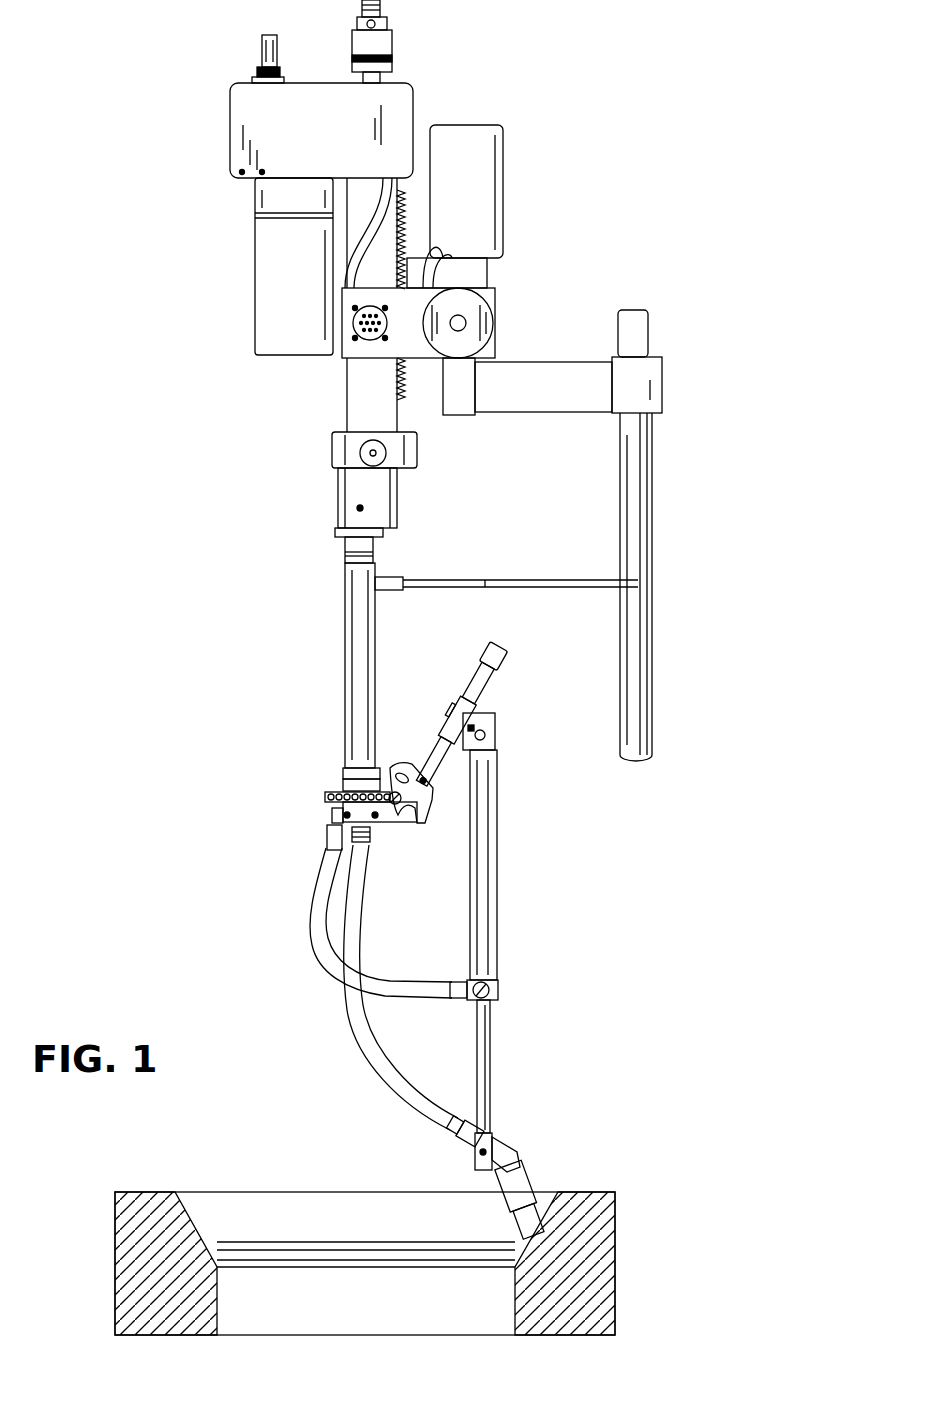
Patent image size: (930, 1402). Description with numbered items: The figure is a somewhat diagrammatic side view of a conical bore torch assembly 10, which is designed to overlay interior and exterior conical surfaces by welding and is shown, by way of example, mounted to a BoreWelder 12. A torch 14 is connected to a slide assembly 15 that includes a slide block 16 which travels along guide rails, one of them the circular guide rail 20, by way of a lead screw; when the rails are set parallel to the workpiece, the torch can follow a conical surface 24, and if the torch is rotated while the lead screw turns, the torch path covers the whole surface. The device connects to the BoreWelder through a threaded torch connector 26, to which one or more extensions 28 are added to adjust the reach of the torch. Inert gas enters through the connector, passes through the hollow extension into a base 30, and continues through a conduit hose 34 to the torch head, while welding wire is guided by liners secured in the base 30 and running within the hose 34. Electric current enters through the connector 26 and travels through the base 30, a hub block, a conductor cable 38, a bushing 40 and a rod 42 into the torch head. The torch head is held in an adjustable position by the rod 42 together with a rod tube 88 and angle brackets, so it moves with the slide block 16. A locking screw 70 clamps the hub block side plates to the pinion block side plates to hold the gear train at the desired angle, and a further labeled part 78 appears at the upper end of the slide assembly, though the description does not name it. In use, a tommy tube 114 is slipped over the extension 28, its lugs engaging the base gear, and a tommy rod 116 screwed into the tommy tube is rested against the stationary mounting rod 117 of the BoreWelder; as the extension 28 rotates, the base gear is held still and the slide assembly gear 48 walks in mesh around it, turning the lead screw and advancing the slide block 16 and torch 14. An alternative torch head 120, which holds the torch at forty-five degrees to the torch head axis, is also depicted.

The conical bore torch assembly 10 is at (266, 751).
The BoreWelder 12 is at (552, 163).
The torch 14 is at (538, 1158).
The slide assembly 15 is at (516, 709).
The slide block 16 is at (472, 702).
The guide rail 20 is at (488, 676).
The conical surface 24 is at (203, 1219).
The threaded torch connector 26 is at (410, 518).
The extension 28 is at (375, 560).
The base 30 is at (312, 799).
The conduit hose 34 is at (373, 1062).
The conductor cable 38 is at (320, 913).
The bushing 40 is at (500, 985).
The rod 42 is at (490, 1041).
The slide assembly gear 48 is at (474, 1155).
The locking screw 70 is at (405, 768).
The knob 78 is at (497, 650).
The rod tube 88 is at (490, 851).
The tommy tube 114 is at (370, 637).
The tommy rod 116 is at (541, 578).
The mounting rod 117 is at (633, 481).
The alternative torch head 120 is at (505, 1146).